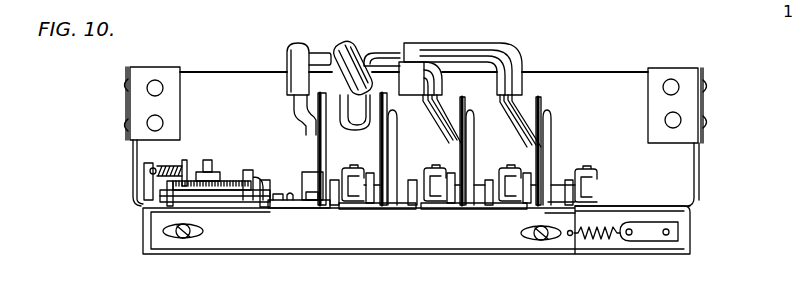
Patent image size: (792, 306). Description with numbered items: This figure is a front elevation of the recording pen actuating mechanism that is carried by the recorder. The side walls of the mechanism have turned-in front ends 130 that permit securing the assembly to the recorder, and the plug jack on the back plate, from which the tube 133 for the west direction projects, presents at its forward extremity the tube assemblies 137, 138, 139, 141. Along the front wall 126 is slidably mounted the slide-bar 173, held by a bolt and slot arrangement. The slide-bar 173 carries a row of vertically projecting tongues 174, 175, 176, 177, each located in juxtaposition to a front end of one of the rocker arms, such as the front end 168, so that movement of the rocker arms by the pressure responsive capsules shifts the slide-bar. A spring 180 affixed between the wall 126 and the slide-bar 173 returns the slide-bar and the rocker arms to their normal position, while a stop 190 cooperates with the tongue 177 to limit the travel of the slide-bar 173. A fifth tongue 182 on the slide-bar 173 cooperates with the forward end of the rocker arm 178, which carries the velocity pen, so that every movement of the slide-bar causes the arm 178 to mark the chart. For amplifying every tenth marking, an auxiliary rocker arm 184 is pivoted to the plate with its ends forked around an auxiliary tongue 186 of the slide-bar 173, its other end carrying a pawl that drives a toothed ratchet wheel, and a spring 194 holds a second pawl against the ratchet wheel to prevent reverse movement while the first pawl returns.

The front wall 126 is at (688, 213).
The front ends 130 is at (688, 77).
The tube 133 is at (753, 11).
The tube assembly 137 is at (287, 70).
The tube assembly 138 is at (331, 50).
The tube assembly 139 is at (406, 60).
The tube assembly 141 is at (446, 30).
The front end of rocker arm 168 is at (595, 182).
The slide-bar 173 is at (570, 213).
The tongue 174 is at (570, 180).
The tongue 175 is at (492, 180).
The tongue 176 is at (417, 180).
The tongue 177 is at (333, 181).
The rocker arm 178 is at (243, 181).
The spring 180 is at (671, 216).
The fifth tongue 182 is at (268, 183).
The auxiliary rocker arm 184 is at (163, 198).
The auxiliary tongue 186 is at (145, 200).
The stop 190 is at (295, 208).
The spring 194 is at (165, 171).